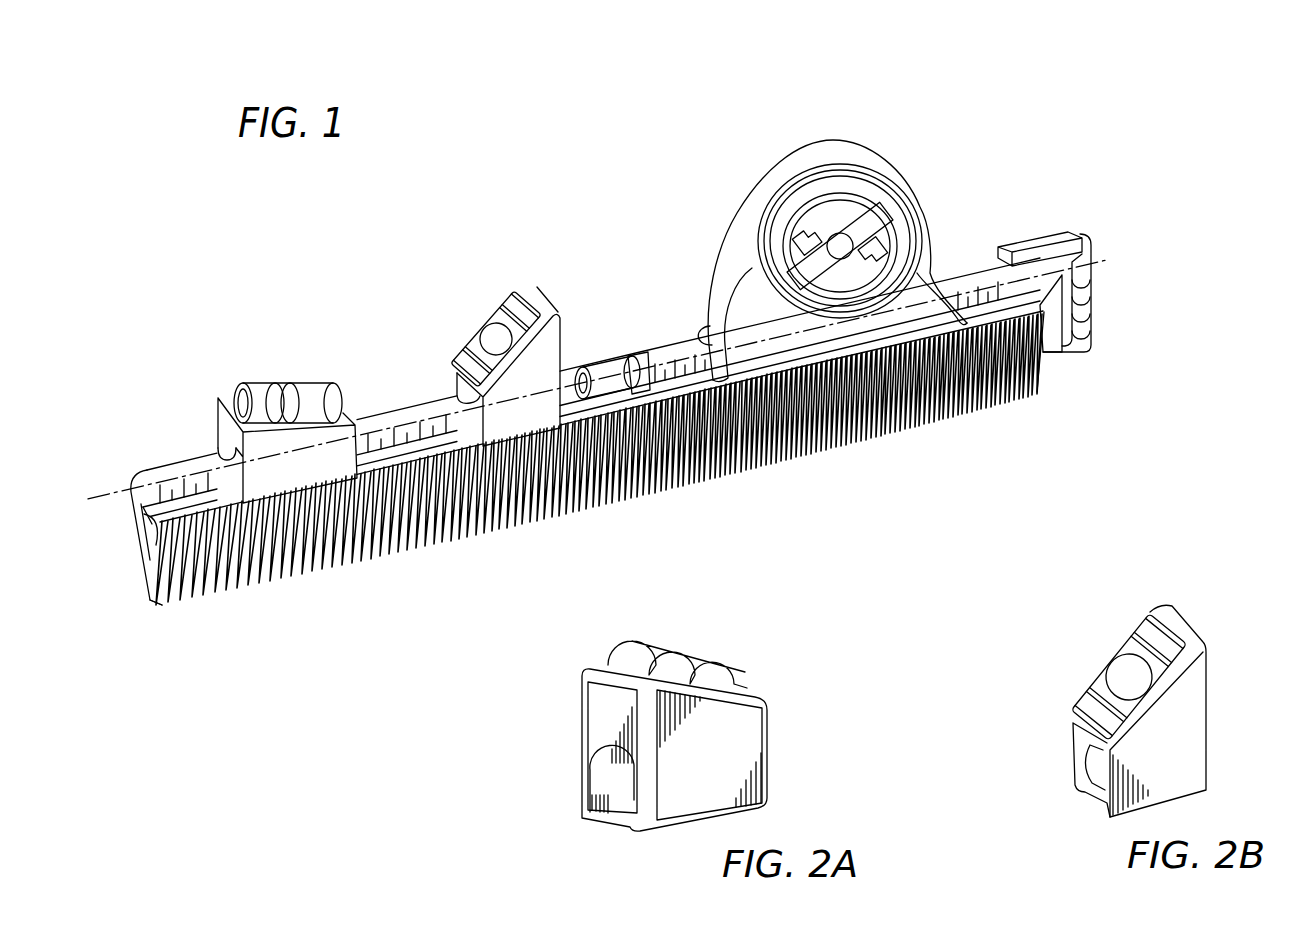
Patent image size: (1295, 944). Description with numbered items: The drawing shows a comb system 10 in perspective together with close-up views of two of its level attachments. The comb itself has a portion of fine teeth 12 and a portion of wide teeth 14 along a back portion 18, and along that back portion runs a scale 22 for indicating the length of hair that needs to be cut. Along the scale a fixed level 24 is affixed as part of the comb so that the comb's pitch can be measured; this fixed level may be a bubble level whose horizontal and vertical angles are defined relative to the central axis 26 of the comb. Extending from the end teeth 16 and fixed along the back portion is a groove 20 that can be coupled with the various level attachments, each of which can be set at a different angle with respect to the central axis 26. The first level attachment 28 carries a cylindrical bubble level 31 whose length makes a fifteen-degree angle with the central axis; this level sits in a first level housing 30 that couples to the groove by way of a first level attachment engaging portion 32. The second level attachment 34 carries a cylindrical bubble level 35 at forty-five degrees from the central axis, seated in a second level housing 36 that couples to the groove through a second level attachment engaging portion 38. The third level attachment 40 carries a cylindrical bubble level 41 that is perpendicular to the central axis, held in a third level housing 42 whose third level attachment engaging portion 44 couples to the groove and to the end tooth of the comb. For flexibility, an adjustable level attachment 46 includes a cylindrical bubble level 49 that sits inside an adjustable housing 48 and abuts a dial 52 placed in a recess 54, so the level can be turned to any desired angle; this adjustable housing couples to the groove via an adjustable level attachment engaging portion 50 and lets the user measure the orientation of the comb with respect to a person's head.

In FIG. 1, the comb system 10 is at (328, 242).
In FIG. 1, the fine teeth 12 is at (596, 455).
In FIG. 1, the wide teeth 14 is at (296, 576).
In FIG. 1, the end teeth 16 is at (148, 590).
In FIG. 1, the back portion 18 is at (373, 423).
In FIG. 1, the groove 20 is at (150, 540).
In FIG. 1, the scale 22 is at (150, 515).
In FIG. 1, the fixed level 24 is at (580, 367).
In FIG. 1, the central axis 26 is at (620, 360).
In FIG. 1, the first level attachment 28 is at (247, 402).
In FIG. 2A, the first level attachment 28 is at (680, 710).
In FIG. 1, the first level housing 30 is at (217, 418).
In FIG. 2A, the first level housing 30 is at (603, 708).
In FIG. 1, the cylindrical bubble level 31 is at (310, 382).
In FIG. 2A, the cylindrical bubble level 31 is at (662, 640).
In FIG. 1, the first level attachment engaging portion 32 is at (218, 452).
In FIG. 2A, the first level attachment engaging portion 32 is at (617, 773).
In FIG. 1, the second level attachment 34 is at (475, 326).
In FIG. 2B, the second level attachment 34 is at (1133, 691).
In FIG. 1, the cylindrical bubble level 35 is at (462, 358).
In FIG. 2B, the cylindrical bubble level 35 is at (1083, 688).
In FIG. 1, the second level housing 36 is at (546, 307).
In FIG. 2B, the second level housing 36 is at (1180, 720).
In FIG. 1, the second level attachment engaging portion 38 is at (465, 396).
In FIG. 2B, the second level attachment engaging portion 38 is at (1086, 755).
In FIG. 1, the third level attachment 40 is at (1079, 306).
In FIG. 1, the cylindrical bubble level 41 is at (1090, 273).
In FIG. 1, the third level housing 42 is at (1040, 247).
In FIG. 1, the third level attachment engaging portion 44 is at (1044, 272).
In FIG. 1, the adjustable level attachment 46 is at (825, 233).
In FIG. 1, the adjustable housing 48 is at (777, 187).
In FIG. 1, the cylindrical bubble level 49 is at (870, 240).
In FIG. 1, the adjustable level attachment engaging portion 50 is at (716, 338).
In FIG. 1, the dial 52 is at (827, 187).
In FIG. 1, the recess 54 is at (840, 297).